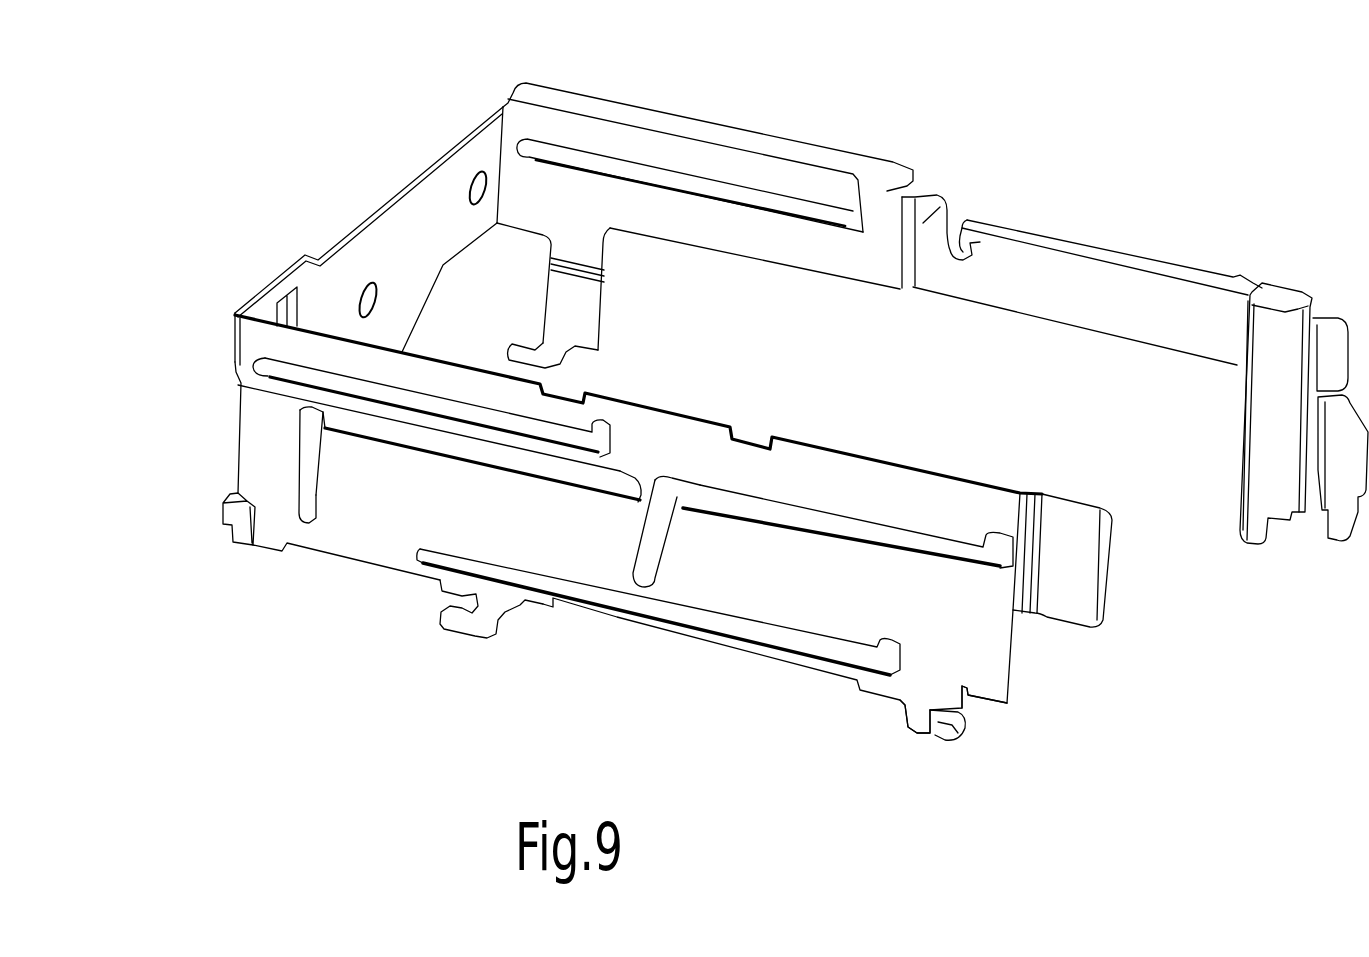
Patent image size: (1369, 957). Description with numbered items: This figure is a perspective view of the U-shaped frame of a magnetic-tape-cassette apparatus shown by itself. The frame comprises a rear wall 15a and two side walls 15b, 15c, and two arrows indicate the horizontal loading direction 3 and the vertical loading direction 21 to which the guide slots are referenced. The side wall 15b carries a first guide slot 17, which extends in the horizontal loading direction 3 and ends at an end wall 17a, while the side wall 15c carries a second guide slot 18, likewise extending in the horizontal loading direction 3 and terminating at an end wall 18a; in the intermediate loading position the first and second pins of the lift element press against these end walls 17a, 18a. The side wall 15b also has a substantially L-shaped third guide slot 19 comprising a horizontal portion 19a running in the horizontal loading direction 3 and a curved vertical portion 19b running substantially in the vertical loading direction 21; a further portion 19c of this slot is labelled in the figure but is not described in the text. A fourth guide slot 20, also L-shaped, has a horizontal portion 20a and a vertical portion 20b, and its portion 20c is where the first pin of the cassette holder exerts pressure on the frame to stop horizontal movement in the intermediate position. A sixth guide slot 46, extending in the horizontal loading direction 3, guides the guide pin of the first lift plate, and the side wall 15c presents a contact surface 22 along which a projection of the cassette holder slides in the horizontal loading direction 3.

The horizontal loading direction 3 is at (1368, 633).
The rear wall 15a is at (412, 220).
The side wall 15b is at (920, 677).
The side wall 15c is at (943, 200).
The first guide slot 17 is at (389, 427).
The end wall 17a is at (255, 367).
The second guide slot 18 is at (654, 199).
The end wall 18a is at (520, 150).
The third guide slot 19 is at (823, 468).
The horizontal portion 19a is at (827, 520).
The vertical portion 19b is at (653, 547).
The slot upper end 19c is at (657, 478).
The fourth guide slot 20 is at (446, 527).
The horizontal portion 20a is at (497, 459).
The vertical portion 20b is at (313, 497).
The portion 20c is at (300, 409).
The vertical loading direction 21 is at (918, 52).
The contact surface 22 is at (1150, 262).
The sixth guide slot 46 is at (815, 634).